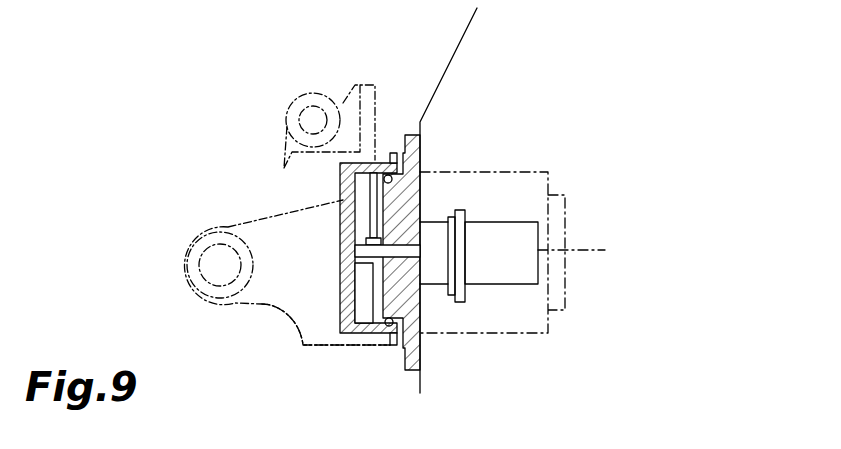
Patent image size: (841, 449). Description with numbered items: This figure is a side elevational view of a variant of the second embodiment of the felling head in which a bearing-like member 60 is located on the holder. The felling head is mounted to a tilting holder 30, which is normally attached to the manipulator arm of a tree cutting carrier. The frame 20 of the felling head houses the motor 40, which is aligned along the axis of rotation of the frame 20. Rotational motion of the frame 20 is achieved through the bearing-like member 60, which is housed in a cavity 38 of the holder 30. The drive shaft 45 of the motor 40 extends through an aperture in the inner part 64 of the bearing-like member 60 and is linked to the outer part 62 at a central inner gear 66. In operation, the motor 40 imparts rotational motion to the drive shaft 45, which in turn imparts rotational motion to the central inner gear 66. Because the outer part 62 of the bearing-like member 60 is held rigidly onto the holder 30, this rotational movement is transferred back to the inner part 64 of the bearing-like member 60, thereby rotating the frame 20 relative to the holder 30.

The frame 20 is at (452, 48).
The tilting holder 30 is at (213, 212).
The cavity 38 is at (290, 328).
The motor 40 is at (512, 252).
The drive shaft 45 is at (365, 258).
The bearing-like member 60 is at (386, 152).
The outer part 62 is at (338, 333).
The inner part 64 is at (421, 322).
The central inner gear 66 is at (363, 243).